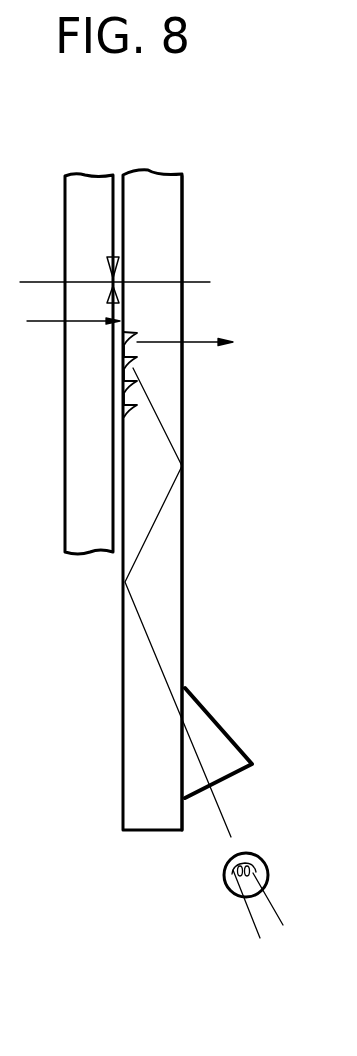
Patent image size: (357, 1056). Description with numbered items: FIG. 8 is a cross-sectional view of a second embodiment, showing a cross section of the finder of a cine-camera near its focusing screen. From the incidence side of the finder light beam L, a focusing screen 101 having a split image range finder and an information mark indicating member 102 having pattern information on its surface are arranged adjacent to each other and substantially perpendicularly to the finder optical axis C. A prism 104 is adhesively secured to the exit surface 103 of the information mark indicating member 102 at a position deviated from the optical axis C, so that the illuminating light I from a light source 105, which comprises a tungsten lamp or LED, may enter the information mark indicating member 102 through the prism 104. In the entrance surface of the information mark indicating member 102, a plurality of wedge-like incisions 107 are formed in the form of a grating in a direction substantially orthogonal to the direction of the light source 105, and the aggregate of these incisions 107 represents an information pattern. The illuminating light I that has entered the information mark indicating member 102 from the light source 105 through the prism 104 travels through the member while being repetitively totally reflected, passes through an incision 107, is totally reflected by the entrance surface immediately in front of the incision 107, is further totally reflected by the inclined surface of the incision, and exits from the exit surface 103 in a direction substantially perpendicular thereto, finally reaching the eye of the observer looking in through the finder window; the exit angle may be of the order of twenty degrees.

The focusing screen 101 is at (86, 175).
The information mark indicating member 102 is at (158, 184).
The exit surface 103 is at (184, 557).
The prism 104 is at (203, 717).
The light source 105 is at (224, 878).
The wedge-like incisions 107 is at (130, 413).
The finder optical axis C is at (37, 282).
The finder light beam L is at (38, 324).
The illuminating light I is at (222, 809).